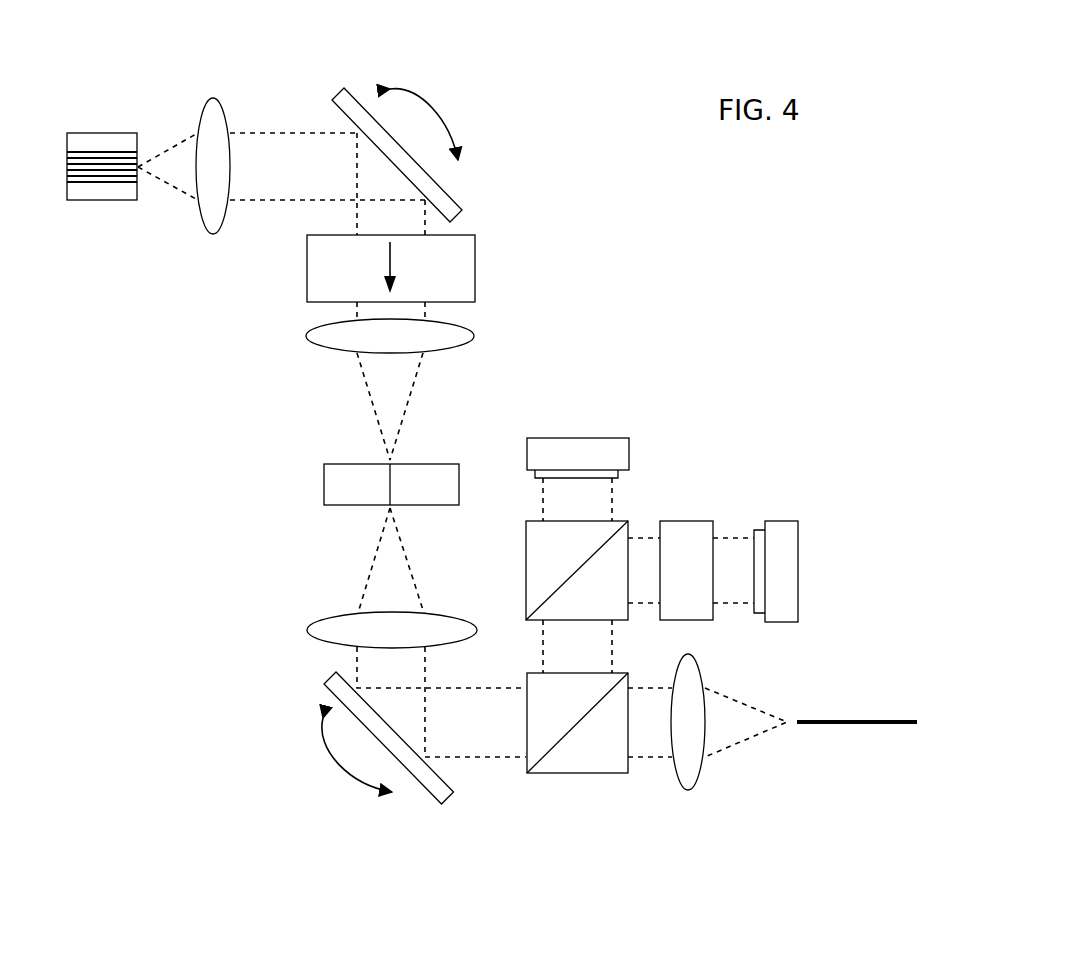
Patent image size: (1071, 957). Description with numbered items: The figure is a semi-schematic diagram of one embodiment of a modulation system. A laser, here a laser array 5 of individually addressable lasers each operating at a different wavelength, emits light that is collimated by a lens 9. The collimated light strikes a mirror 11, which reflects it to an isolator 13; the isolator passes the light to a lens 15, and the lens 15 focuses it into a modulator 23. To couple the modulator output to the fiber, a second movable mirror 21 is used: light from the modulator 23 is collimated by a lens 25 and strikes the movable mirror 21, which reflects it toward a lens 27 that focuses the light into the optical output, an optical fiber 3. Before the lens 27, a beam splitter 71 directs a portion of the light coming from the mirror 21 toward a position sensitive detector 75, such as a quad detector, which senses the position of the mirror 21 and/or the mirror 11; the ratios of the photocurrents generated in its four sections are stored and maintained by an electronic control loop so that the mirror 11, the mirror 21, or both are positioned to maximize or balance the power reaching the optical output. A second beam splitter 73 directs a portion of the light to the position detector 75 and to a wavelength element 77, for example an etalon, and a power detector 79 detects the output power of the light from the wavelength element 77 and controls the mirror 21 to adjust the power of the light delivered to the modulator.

The optical fiber 3 is at (865, 720).
The laser array 5 is at (103, 200).
The lens 9 is at (210, 98).
The mirror 11 is at (333, 97).
The isolator 13 is at (475, 265).
The lens 15 is at (477, 337).
The movable mirror 21 is at (443, 800).
The modulator 23 is at (324, 483).
The lens 25 is at (308, 628).
The lens 27 is at (688, 790).
The beam splitter 71 is at (580, 773).
The second beam splitter 73 is at (526, 570).
The position sensitive detector 75 is at (578, 438).
The wavelength element 77 is at (687, 521).
The power detector 79 is at (778, 521).